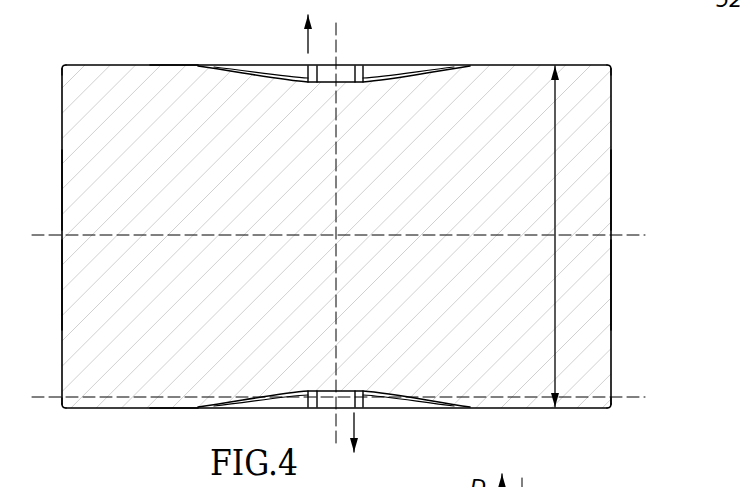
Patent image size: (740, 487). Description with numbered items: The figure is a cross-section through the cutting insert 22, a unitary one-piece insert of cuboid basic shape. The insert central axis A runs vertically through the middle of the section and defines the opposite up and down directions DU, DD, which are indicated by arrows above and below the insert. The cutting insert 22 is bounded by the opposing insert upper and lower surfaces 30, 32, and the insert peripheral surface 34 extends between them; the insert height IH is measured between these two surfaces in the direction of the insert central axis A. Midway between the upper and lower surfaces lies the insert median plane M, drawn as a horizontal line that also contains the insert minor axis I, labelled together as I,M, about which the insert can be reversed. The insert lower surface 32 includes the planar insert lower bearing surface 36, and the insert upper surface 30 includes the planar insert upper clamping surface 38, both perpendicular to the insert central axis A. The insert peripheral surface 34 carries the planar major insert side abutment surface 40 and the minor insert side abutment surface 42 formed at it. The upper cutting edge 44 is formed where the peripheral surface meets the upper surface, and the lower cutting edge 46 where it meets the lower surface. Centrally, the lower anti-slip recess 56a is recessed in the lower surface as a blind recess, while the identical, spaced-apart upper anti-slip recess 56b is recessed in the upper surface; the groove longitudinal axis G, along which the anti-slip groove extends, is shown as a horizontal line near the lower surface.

The cutting insert 22 is at (612, 62).
The insert upper surface 30 is at (125, 65).
The insert lower surface 32 is at (117, 409).
The insert peripheral surface 34 is at (613, 118).
The insert lower bearing surface 36 is at (178, 409).
The insert upper clamping surface 38 is at (174, 65).
The major insert side abutment surface 40 is at (62, 205).
The minor insert side abutment surface 42 is at (62, 290).
The upper cutting edge 44 is at (62, 66).
The lower cutting edge 46 is at (62, 409).
The lower anti-slip recess 56a is at (416, 414).
The upper anti-slip recess 56b is at (421, 57).
The insert central axis A is at (336, 42).
The insert minor axis and insert median plane I,M is at (634, 236).
The groove longitudinal axis G is at (638, 397).
The insert height IH is at (556, 98).
The up direction DU is at (291, 34).
The down direction DD is at (370, 432).